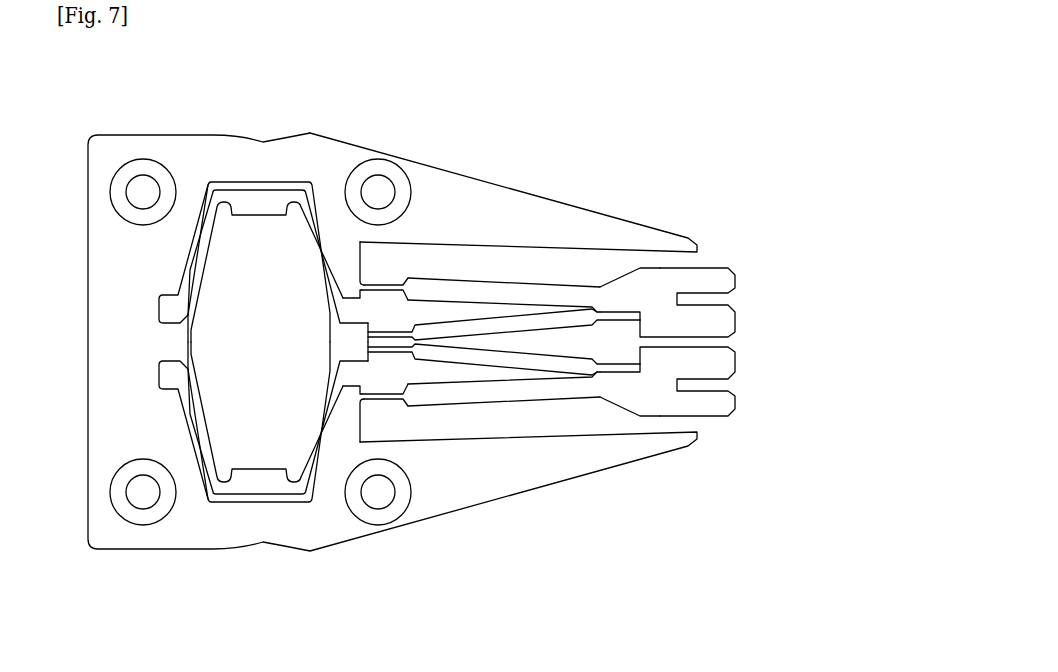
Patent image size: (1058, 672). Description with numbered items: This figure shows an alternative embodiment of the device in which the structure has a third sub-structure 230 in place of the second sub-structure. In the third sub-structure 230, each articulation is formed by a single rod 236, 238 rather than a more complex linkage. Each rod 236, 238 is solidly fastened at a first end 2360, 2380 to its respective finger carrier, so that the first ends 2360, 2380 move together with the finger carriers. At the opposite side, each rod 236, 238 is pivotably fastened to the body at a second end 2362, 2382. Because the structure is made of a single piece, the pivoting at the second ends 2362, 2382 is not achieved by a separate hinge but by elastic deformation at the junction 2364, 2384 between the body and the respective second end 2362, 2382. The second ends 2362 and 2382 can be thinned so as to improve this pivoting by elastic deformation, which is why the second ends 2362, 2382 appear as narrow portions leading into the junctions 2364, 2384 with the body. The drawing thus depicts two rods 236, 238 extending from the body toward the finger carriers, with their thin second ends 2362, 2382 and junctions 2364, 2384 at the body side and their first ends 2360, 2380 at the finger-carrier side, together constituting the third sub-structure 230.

The third sub-structure 230 is at (645, 285).
The rod 236 is at (478, 286).
The first end 2360 is at (603, 284).
The second end 2362 is at (381, 280).
The junction 2364 is at (350, 287).
The rod 238 is at (495, 399).
The first end 2380 is at (628, 399).
The second end 2382 is at (377, 409).
The junction 2384 is at (350, 398).